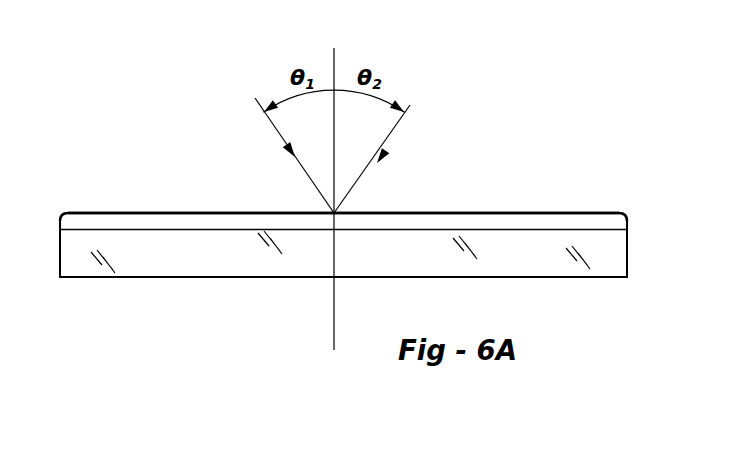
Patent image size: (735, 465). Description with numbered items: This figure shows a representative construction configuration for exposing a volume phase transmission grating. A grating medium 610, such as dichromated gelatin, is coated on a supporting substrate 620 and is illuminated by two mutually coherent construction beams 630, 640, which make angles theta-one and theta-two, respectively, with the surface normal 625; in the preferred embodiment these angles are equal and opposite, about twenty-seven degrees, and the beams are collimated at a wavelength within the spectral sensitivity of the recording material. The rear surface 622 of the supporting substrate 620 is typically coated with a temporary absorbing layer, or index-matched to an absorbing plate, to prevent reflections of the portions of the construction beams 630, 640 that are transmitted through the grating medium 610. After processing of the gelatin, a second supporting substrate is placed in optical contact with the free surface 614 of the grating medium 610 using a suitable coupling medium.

The grating medium 610 is at (605, 222).
The free surface 614 is at (197, 213).
The supporting substrate 620 is at (608, 252).
The rear surface 622 is at (520, 277).
The surface normal 625 is at (333, 58).
The construction beam 630 is at (277, 123).
The construction beam 640 is at (393, 128).